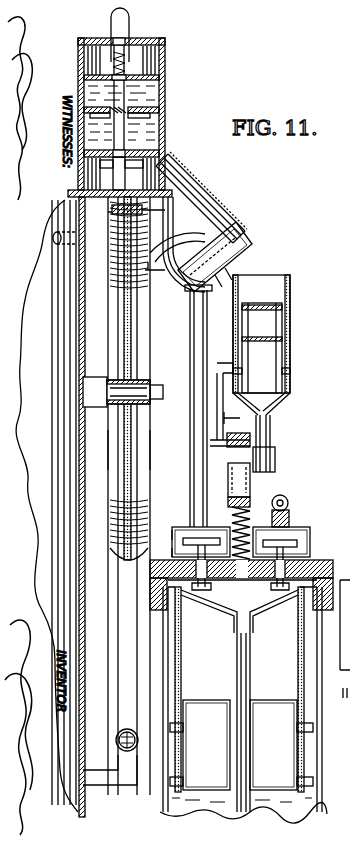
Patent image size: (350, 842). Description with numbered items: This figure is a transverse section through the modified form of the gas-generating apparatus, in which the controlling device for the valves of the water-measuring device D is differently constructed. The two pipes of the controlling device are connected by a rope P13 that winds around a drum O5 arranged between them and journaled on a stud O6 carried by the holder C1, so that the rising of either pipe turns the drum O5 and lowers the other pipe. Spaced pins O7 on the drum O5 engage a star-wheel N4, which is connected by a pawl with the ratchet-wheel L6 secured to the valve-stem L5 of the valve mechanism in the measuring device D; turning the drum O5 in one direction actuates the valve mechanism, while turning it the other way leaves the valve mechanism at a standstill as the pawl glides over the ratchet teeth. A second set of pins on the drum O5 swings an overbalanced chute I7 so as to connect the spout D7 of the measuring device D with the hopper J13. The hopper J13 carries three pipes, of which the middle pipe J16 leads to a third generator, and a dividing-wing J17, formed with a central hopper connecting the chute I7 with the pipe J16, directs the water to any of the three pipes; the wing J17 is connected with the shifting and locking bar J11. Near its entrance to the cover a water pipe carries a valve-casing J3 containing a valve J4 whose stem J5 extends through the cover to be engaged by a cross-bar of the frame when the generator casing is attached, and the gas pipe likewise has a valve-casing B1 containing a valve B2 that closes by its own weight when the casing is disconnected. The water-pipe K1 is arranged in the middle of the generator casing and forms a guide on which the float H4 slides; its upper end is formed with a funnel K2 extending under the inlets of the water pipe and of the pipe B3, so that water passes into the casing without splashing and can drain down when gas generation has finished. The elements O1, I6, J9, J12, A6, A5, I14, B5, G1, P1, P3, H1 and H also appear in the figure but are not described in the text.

The water-measuring device D is at (127, 117).
The valve-stem L5 is at (121, 173).
The ratchet-wheel L6 is at (108, 212).
The holder C1 is at (36, 418).
The rope P13 is at (124, 342).
The stud O6 is at (152, 385).
The drum O5 is at (143, 446).
The pipe P1 is at (118, 652).
The valve P3 is at (116, 740).
The elbow O1 is at (177, 244).
The bracket I6 is at (155, 268).
The spout D7 is at (210, 197).
The star-wheel N4 is at (185, 168).
The pins O7 is at (198, 200).
The chute I7 is at (262, 248).
The pipe B3 is at (197, 325).
The hopper J13 is at (280, 294).
The dividing-wing J17 is at (275, 362).
The pipe J16 is at (270, 430).
The pipe J9 is at (217, 407).
The shifting and locking bar J11 is at (232, 421).
The bar J12 is at (210, 443).
The housing A6 is at (275, 456).
The plunger A5 is at (250, 490).
The ball I14 is at (288, 500).
The valve-casing B1 is at (176, 520).
The valve B2 is at (172, 535).
The valve box wall B5 is at (172, 553).
The valve-casing J3 is at (310, 530).
The valve J4 is at (297, 543).
The stem J5 is at (290, 562).
The casing G1 is at (300, 680).
The funnel K2 is at (258, 600).
The water-pipe K1 is at (250, 660).
The float H4 is at (240, 745).
The pipe H1 is at (313, 728).
The pipe H is at (313, 782).